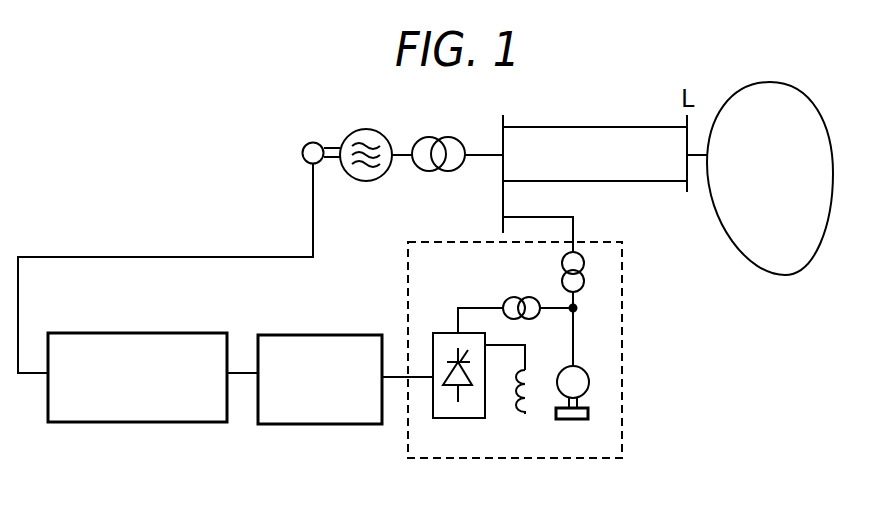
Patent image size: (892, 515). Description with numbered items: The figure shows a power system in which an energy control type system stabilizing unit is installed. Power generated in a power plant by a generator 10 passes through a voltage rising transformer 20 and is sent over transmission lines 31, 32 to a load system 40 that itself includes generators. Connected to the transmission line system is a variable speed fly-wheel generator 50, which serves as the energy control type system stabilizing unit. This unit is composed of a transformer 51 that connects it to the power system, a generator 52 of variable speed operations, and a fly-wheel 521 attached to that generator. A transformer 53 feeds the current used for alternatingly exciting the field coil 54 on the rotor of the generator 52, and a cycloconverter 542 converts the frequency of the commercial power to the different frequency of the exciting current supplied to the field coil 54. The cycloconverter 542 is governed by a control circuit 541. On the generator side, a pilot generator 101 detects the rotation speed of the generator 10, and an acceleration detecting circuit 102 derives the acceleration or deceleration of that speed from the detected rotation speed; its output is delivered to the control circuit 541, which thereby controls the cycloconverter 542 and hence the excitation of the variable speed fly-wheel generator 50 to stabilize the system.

The generator 10 is at (368, 128).
The pilot generator 101 is at (310, 144).
The acceleration detecting circuit 102 is at (190, 332).
The voltage rising transformer 20 is at (433, 137).
The transmission line 31 is at (553, 126).
The transmission line 32 is at (565, 180).
The load system 40 is at (754, 82).
The variable speed fly-wheel generator 50 is at (622, 298).
The transformer 51 is at (562, 268).
The generator of variable speed operations 52 is at (585, 372).
The fly-wheel 521 is at (567, 421).
The transformer 53 is at (542, 317).
The field coil 54 is at (522, 416).
The control circuit 541 is at (348, 334).
The cycloconverter 542 is at (447, 419).